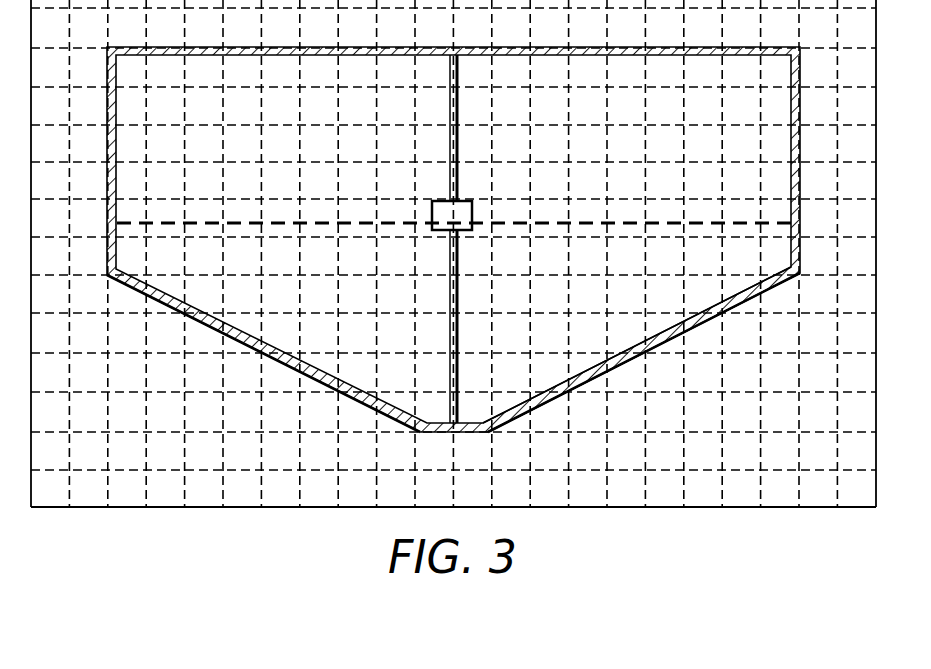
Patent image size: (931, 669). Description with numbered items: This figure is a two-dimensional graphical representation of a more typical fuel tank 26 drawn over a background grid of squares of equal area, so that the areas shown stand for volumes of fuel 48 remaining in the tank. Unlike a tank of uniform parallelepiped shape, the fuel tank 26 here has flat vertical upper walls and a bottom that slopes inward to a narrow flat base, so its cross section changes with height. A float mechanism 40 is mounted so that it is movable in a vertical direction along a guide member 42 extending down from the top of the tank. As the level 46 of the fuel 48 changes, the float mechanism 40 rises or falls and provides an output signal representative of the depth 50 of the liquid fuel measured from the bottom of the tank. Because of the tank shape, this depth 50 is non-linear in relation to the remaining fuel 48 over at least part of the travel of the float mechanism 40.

The fuel tank 26 is at (800, 146).
The float mechanism 40 is at (465, 210).
The guide member 42 is at (459, 107).
The level of fuel 46 is at (667, 222).
The fuel 48 is at (778, 262).
The depth of the fuel 50 is at (477, 227).